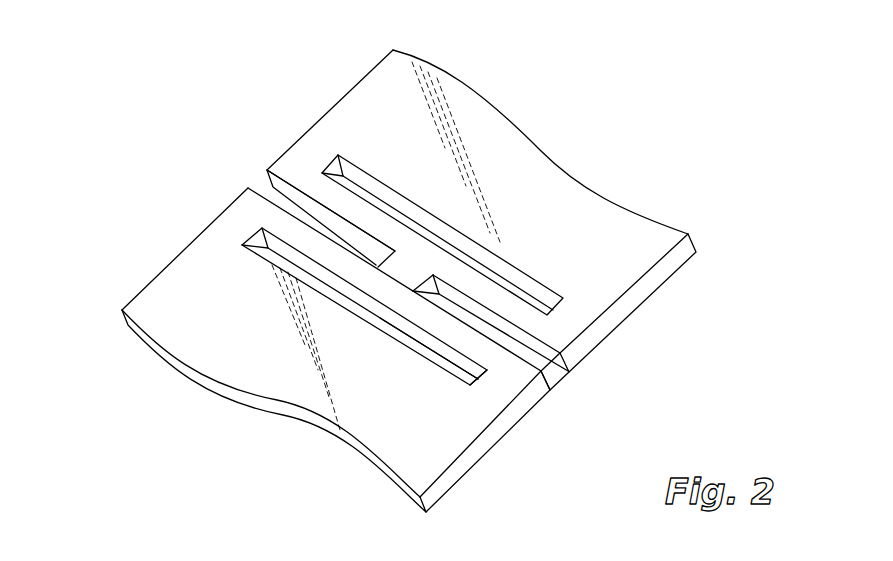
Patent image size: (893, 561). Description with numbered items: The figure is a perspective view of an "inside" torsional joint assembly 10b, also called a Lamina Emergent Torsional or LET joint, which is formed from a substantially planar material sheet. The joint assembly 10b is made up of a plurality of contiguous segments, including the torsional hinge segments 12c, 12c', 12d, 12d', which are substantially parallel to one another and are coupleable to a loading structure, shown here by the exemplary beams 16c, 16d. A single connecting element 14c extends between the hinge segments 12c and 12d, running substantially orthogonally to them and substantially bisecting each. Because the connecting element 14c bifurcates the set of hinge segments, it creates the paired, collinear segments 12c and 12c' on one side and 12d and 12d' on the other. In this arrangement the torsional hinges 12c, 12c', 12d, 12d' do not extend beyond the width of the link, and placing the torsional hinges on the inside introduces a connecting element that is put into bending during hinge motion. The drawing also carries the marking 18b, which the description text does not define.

The torsional joint assembly 10b is at (144, 89).
The hinge segment 12c is at (425, 190).
The hinge segment 12c' is at (548, 323).
The hinge segment 12d is at (330, 282).
The hinge segment 12d' is at (460, 409).
The connecting element 14c is at (397, 265).
The beam 16c is at (528, 157).
The beam 16d is at (237, 350).
The direction arrow 18b is at (274, 258).